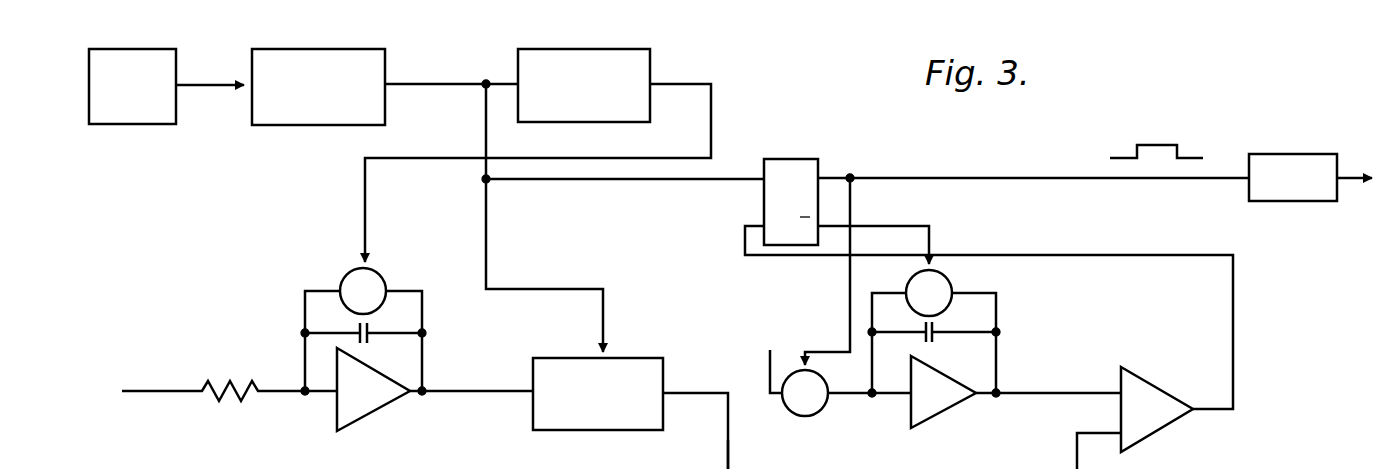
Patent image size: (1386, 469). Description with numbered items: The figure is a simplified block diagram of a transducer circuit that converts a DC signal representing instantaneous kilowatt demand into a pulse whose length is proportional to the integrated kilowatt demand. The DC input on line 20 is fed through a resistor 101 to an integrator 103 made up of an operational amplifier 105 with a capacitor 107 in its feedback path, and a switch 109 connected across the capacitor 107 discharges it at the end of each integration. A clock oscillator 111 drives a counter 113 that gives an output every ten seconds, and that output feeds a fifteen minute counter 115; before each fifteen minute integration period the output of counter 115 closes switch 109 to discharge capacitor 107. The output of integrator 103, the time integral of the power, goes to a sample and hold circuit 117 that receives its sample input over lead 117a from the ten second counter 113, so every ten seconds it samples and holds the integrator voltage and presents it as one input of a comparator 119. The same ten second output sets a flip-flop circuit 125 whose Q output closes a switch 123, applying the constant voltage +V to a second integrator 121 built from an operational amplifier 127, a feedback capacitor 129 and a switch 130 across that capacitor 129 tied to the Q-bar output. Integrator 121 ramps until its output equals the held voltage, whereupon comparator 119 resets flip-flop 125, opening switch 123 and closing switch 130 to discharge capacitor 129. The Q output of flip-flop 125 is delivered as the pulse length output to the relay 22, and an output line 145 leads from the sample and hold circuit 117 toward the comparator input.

The line 20 is at (146, 392).
The relay 22 is at (1303, 202).
The resistor 101 is at (226, 384).
The integrator 103 is at (386, 418).
The operational amplifier 105 is at (434, 374).
The capacitor 107 is at (370, 343).
The switch 109 is at (347, 270).
The clock oscillator 111 is at (128, 125).
The counter 113 is at (277, 125).
The 15 minute counter 115 is at (618, 49).
The sample and hold circuit 117 is at (652, 357).
The lead 117a is at (604, 320).
The comparator 119 is at (1150, 434).
The integrator 121 is at (940, 419).
The switch 123 is at (800, 417).
The flip-flop circuit 125 is at (814, 159).
The operational amplifier 127 is at (965, 380).
The capacitor 129 is at (936, 343).
The switch 130 is at (952, 285).
The output line 145 is at (667, 454).